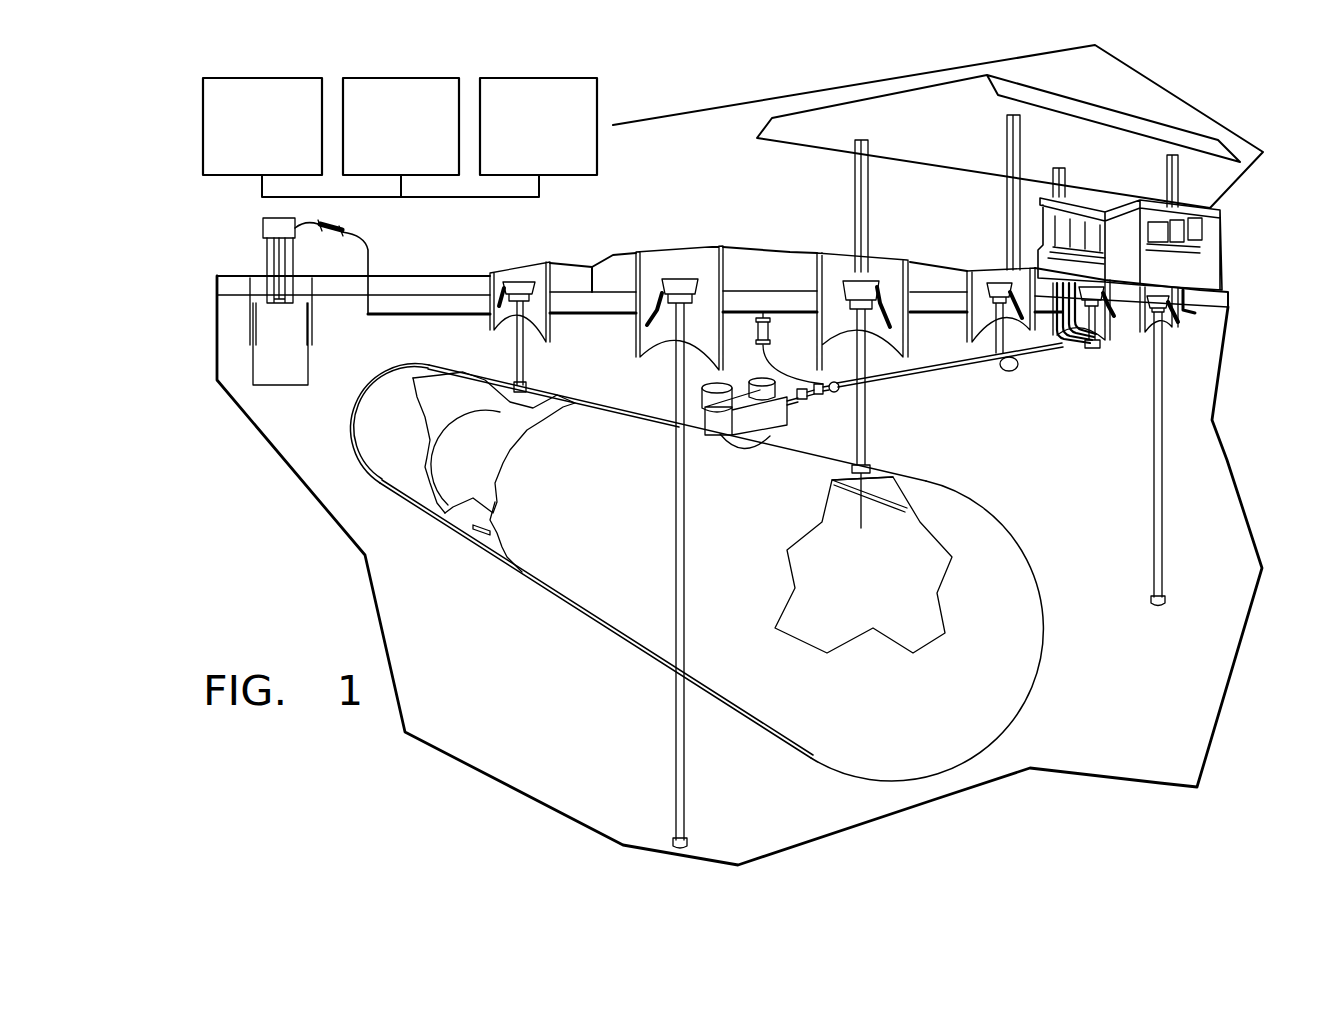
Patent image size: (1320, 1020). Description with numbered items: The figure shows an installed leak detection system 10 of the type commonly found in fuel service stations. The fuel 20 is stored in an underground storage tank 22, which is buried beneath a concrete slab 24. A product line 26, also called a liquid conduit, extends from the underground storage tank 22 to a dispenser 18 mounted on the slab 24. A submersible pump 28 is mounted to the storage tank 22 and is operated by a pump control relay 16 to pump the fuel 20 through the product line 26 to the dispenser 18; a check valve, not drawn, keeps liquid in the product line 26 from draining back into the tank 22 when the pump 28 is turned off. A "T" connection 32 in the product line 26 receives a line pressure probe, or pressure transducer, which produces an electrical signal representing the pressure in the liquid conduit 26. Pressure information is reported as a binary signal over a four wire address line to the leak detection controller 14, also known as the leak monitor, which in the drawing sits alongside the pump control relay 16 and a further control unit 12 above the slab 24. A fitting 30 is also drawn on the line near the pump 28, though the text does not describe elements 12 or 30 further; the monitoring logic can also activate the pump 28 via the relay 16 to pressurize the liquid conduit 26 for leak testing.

The leak detection system 10 is at (709, 88).
The pump controller 12 is at (557, 76).
The leak detection controller 14 is at (283, 76).
The pump control relay 16 is at (420, 76).
The dispenser 18 is at (1048, 218).
The fuel 20 is at (852, 618).
The underground storage tank 22 is at (1017, 583).
The concrete slab 24 is at (227, 287).
The product line 26 is at (943, 370).
The submersible pump 28 is at (763, 418).
The pipe fitting 30 is at (823, 392).
The "T" connection 32 is at (839, 385).